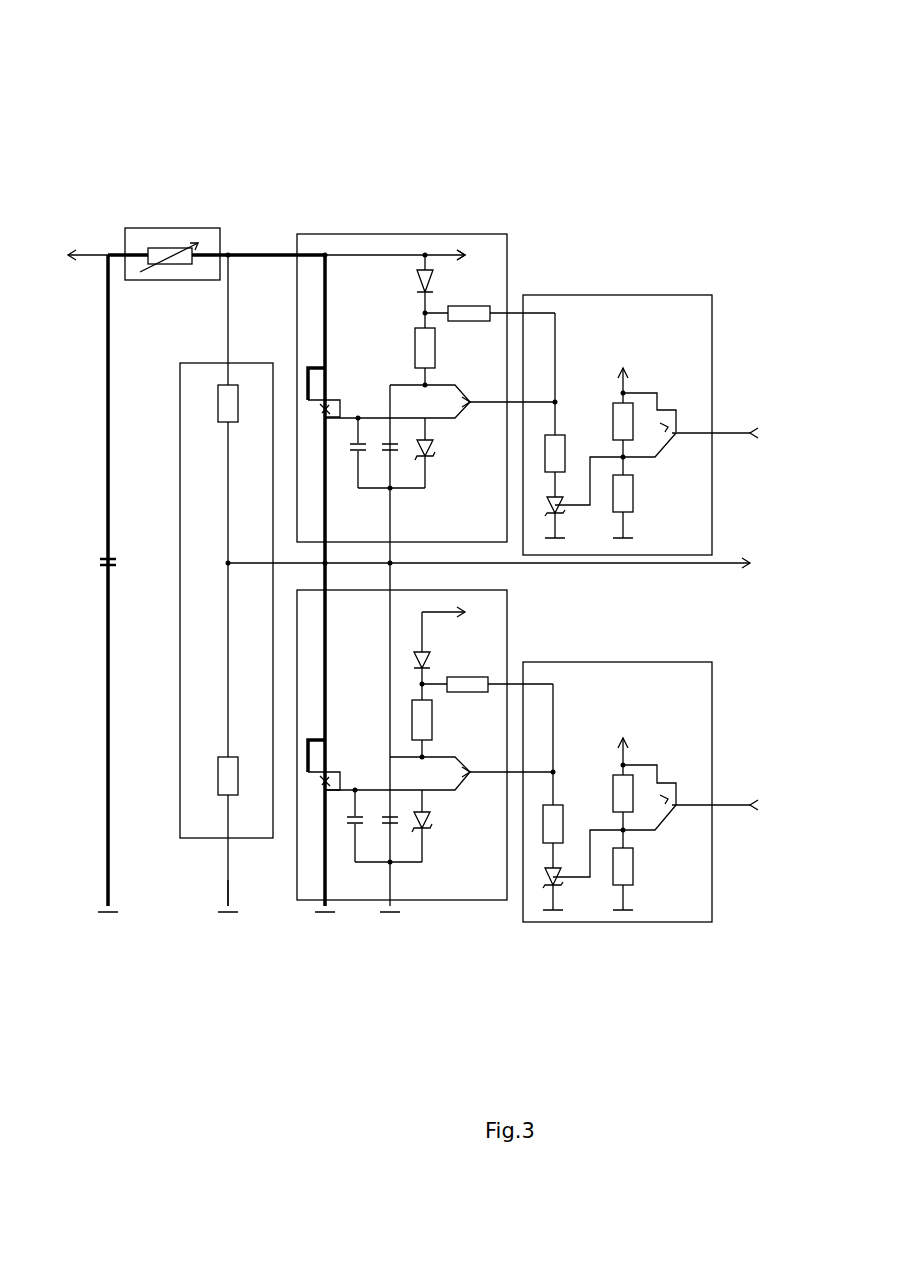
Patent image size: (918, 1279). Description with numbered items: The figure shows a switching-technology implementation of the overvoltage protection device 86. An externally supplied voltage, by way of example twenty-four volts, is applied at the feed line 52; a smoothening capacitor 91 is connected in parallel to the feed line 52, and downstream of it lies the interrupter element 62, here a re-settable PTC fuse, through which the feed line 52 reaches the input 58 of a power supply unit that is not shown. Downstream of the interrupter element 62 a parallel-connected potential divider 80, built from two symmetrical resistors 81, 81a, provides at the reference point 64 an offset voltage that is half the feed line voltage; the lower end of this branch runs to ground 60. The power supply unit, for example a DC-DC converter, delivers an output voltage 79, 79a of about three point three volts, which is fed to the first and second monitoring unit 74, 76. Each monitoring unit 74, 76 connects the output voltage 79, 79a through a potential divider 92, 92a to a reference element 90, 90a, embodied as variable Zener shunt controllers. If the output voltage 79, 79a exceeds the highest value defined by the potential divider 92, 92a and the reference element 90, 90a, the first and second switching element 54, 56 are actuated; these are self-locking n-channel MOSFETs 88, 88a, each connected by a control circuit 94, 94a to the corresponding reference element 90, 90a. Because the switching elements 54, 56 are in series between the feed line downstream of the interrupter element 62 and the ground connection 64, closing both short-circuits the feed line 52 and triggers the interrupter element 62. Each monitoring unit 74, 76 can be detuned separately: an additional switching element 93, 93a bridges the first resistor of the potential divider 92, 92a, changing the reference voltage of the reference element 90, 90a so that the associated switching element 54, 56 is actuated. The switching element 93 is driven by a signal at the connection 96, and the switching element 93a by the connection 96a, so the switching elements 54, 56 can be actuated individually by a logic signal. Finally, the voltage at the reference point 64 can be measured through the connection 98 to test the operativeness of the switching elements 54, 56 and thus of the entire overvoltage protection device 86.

The overvoltage protection device 86 is at (445, 135).
The feed line 52 is at (72, 251).
The interrupter element 62 is at (165, 228).
The first switching element 54 is at (365, 234).
The second switching element 56 is at (425, 900).
The input of the power supply unit 58 is at (468, 253).
The first monitoring unit 74 is at (608, 295).
The second monitoring unit 76 is at (580, 923).
The output voltage 79 is at (630, 366).
The output voltage 79a is at (630, 736).
The potential divider 80 is at (197, 840).
The resistor 81 is at (222, 400).
The resistor 81a is at (218, 782).
The n-channel MOSFET 88 is at (330, 410).
The n-channel MOSFET 88a is at (305, 791).
The reference element 90 is at (568, 514).
The reference element 90a is at (572, 890).
The smoothening capacitor 91 is at (106, 560).
The potential divider 92 is at (676, 466).
The potential divider 92a is at (665, 851).
The additional switching element 93 is at (678, 428).
The additional switching element 93a is at (678, 800).
The control circuit 94 is at (452, 462).
The control circuit 94a is at (448, 818).
The connection 96 is at (756, 433).
The connection 96a is at (756, 805).
The connection 98 is at (760, 564).
The reference point 64 is at (335, 569).
The ground connection 60 is at (223, 916).